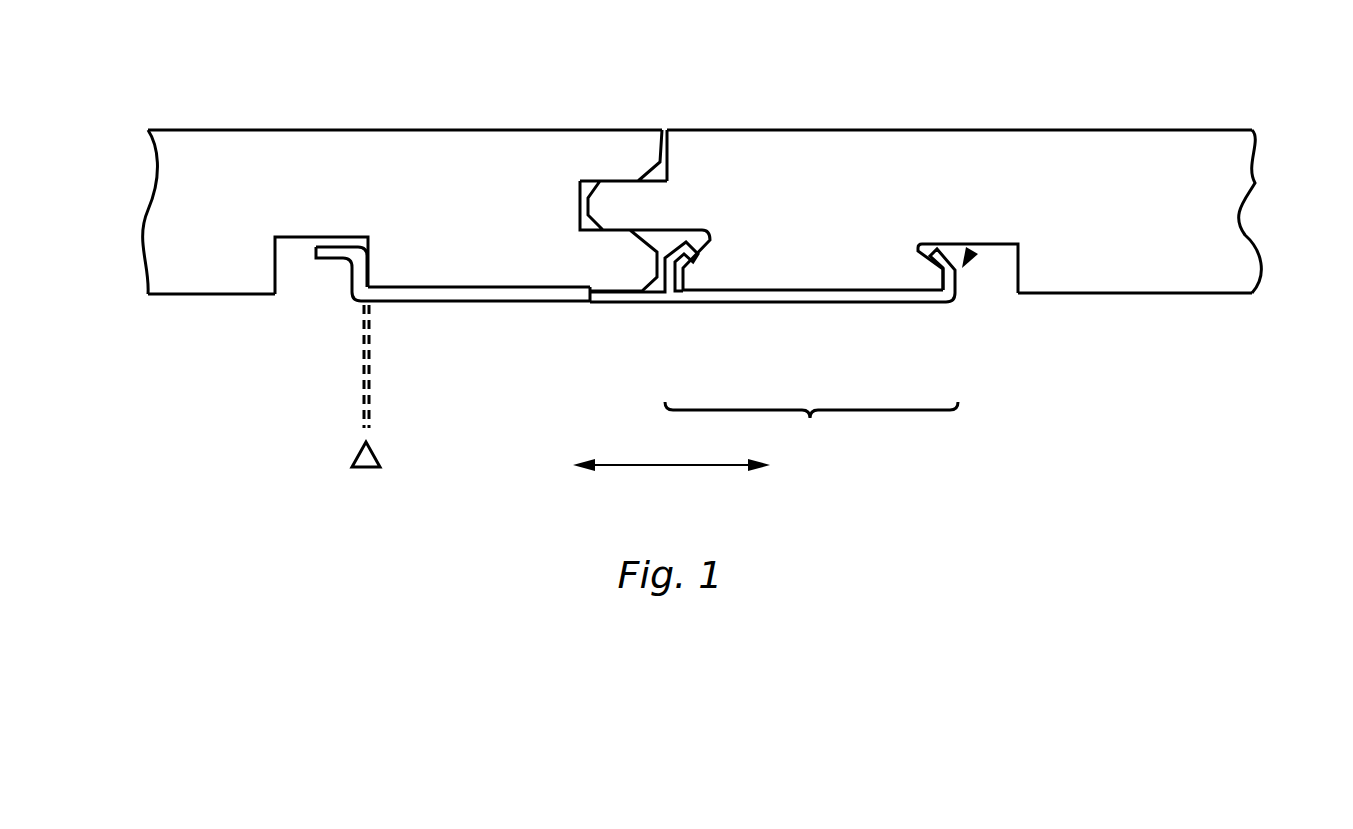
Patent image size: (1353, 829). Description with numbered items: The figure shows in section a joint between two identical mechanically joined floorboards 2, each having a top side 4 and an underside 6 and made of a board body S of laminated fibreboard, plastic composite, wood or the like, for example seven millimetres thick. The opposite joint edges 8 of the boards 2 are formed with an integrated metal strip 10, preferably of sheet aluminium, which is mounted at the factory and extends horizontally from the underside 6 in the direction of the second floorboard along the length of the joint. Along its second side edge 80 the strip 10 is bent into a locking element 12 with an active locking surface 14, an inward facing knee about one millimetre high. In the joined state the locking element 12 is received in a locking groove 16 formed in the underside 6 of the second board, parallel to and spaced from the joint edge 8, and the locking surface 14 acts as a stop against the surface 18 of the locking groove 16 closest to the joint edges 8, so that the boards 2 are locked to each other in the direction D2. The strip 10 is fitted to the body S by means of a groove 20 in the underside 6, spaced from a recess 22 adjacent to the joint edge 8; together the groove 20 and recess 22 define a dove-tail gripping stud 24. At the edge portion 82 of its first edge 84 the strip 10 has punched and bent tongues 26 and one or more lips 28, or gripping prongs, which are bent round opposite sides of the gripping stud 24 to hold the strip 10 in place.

The floorboard 2 is at (128, 194).
The top side 4 is at (373, 130).
The board body S is at (238, 150).
The underside 6 is at (198, 296).
The joint edge 8 is at (660, 130).
The strip 10 is at (521, 301).
The locking element 12 is at (343, 292).
The locking surface 14 is at (372, 260).
The locking groove 16 is at (294, 297).
The surface of the locking groove 18 is at (366, 242).
The groove 20 is at (990, 248).
The recess 22 is at (672, 232).
The gripping stud 24 is at (805, 290).
The tongues 26 is at (703, 268).
The lips 28 is at (933, 273).
The second side edge 80 is at (315, 295).
The edge portion 82 is at (811, 430).
The first edge 84 is at (972, 250).
The locking direction D2 is at (671, 481).